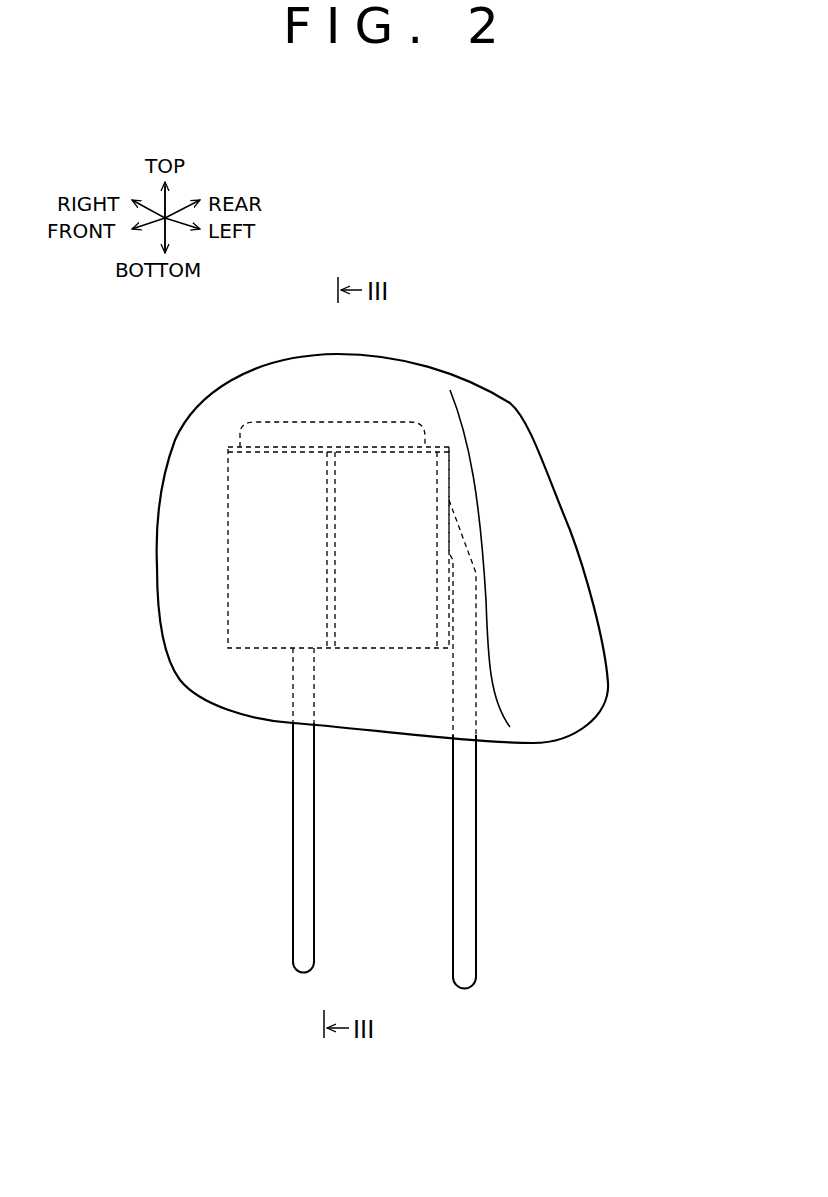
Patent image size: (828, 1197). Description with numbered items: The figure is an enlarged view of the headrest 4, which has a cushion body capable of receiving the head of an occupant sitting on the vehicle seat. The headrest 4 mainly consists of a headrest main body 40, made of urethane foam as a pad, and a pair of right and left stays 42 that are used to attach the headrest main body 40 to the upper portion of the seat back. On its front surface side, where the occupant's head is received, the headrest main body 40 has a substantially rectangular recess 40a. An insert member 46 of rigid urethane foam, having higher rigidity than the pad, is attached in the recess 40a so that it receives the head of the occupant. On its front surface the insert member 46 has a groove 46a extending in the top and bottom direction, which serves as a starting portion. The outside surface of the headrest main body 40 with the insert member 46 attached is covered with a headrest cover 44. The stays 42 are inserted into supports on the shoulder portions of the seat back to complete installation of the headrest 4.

The headrest 4 is at (365, 645).
The headrest main body 40 is at (513, 460).
The recess 40a is at (226, 615).
The stays 42 is at (292, 804).
The headrest cover 44 is at (553, 520).
The insert member 46 is at (260, 573).
The groove 46a is at (327, 513).